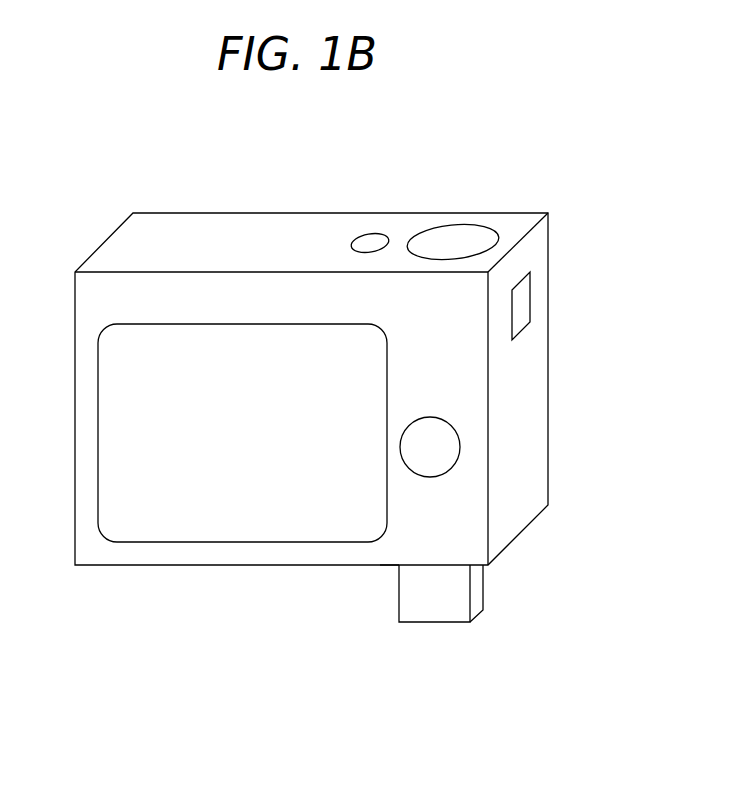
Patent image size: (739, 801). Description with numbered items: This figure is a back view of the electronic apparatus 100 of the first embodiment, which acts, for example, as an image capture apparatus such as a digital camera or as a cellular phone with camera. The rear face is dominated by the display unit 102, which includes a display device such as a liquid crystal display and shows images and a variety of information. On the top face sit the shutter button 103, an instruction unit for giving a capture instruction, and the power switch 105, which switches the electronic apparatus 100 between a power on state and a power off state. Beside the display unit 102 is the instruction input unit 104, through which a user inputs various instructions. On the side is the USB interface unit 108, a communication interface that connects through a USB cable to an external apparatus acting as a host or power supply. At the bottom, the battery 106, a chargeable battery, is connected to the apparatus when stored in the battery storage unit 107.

The electronic apparatus 100 is at (109, 201).
The display unit 102 is at (237, 517).
The shutter button 103 is at (456, 240).
The instruction input unit 104 is at (432, 447).
The power switch 105 is at (370, 242).
The battery 106 is at (438, 615).
The battery storage unit 107 is at (390, 567).
The USB interface unit 108 is at (518, 300).